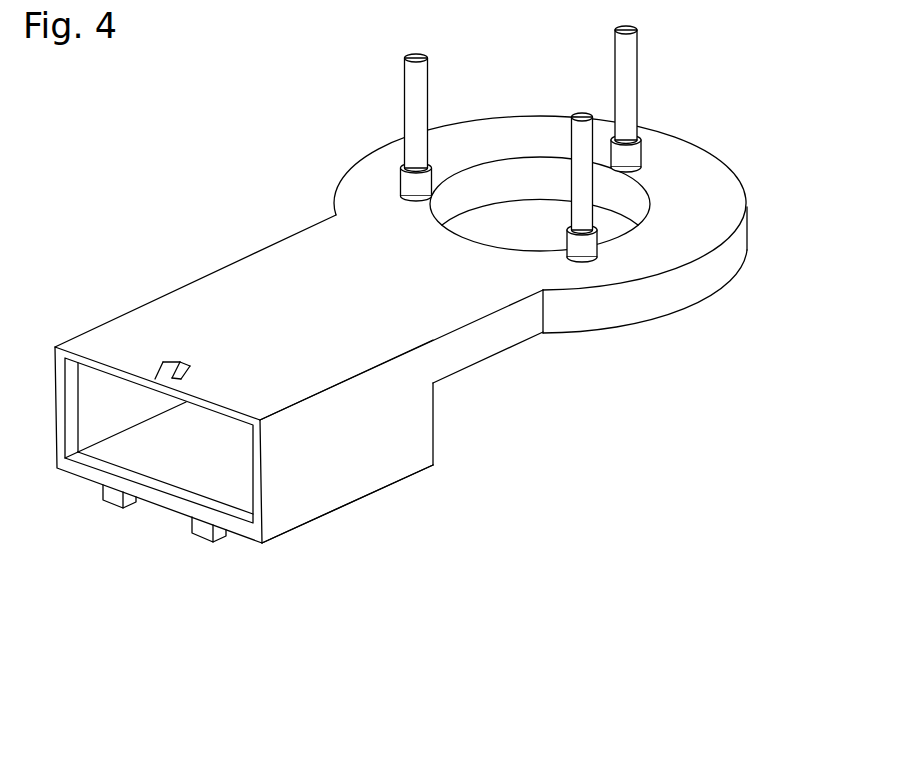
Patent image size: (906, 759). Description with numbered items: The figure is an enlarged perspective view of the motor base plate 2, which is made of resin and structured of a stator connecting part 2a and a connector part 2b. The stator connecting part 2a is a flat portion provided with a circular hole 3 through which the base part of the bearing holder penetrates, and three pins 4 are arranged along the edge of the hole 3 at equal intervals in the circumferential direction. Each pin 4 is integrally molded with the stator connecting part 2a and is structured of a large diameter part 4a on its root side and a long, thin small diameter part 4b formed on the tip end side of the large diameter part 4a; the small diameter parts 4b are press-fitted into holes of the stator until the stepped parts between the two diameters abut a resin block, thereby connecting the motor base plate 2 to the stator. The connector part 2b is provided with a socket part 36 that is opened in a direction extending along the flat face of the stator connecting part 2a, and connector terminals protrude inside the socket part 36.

The motor base plate 2 is at (270, 218).
The stator connecting part 2a is at (708, 233).
The connector part 2b is at (143, 328).
The circular hole 3 is at (480, 236).
The pin 4 is at (562, 133).
The large diameter part 4a is at (633, 152).
The small diameter part 4b is at (630, 82).
The socket part 36 is at (335, 485).